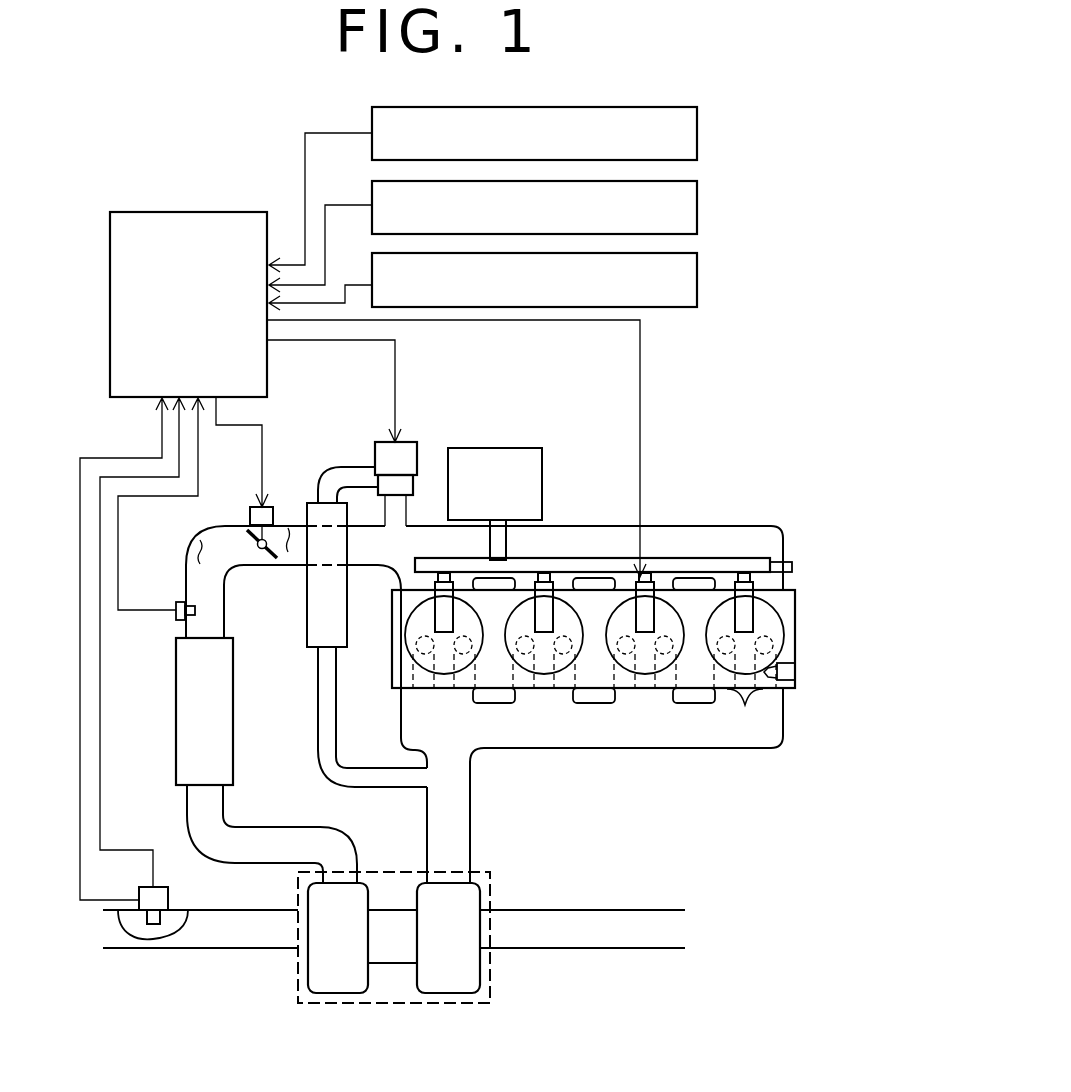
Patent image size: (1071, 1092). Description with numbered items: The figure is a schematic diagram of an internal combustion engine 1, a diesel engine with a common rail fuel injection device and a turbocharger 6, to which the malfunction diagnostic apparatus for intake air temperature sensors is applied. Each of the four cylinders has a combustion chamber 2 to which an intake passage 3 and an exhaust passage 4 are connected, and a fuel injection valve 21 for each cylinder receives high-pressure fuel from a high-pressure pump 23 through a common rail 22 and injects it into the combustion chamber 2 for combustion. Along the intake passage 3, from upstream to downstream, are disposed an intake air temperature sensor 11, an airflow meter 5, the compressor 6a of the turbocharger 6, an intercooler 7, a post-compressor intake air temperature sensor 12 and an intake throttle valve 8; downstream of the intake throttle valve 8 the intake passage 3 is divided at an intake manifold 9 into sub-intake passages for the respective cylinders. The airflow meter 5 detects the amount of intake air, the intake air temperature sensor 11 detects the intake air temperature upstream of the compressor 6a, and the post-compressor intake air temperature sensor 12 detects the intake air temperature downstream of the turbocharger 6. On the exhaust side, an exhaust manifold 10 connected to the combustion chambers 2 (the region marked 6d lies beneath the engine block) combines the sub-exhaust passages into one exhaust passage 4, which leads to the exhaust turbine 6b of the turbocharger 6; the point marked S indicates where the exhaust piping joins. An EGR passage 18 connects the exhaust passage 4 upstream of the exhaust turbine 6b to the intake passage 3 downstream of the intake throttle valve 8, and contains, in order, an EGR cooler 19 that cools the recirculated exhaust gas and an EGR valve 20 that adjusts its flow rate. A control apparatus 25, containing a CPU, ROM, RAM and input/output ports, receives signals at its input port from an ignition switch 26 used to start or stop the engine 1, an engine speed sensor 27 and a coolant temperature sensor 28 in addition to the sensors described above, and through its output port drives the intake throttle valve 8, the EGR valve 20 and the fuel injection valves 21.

The internal combustion engine 1 is at (796, 636).
The combustion chamber 2 is at (467, 618).
The intake passage 3 is at (186, 570).
The exhaust passage 4 is at (470, 827).
The airflow meter 5 is at (168, 898).
The turbocharger 6 is at (434, 974).
The compressor 6a is at (332, 988).
The exhaust turbine 6b is at (476, 888).
The exhaust port 6d is at (745, 716).
The intercooler 7 is at (176, 738).
The intake throttle valve 8 is at (250, 546).
The intake manifold 9 is at (760, 527).
The exhaust manifold 10 is at (650, 748).
The intake air temperature sensor 11 is at (139, 893).
The post-compressor intake air temperature sensor 12 is at (176, 622).
The EGR passage 18 is at (317, 722).
The EGR cooler 19 is at (307, 609).
The EGR valve 20 is at (406, 442).
The fuel injection valve 21 is at (451, 578).
The common rail 22 is at (707, 560).
The high-pressure pump 23 is at (502, 448).
The control apparatus 25 is at (110, 302).
The ignition switch 26 is at (697, 133).
The engine speed sensor 27 is at (697, 207).
The coolant temperature sensor 28 is at (697, 281).
The joint portion S is at (450, 757).